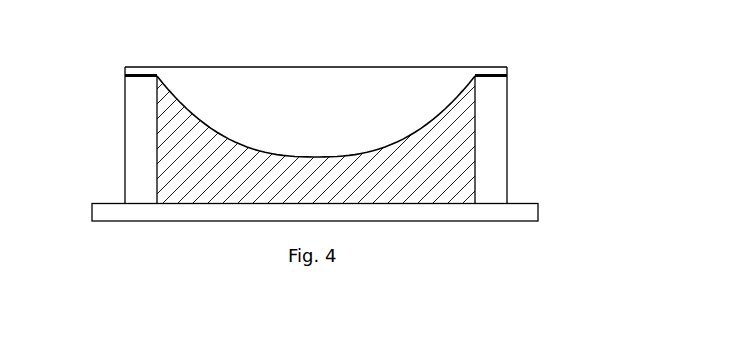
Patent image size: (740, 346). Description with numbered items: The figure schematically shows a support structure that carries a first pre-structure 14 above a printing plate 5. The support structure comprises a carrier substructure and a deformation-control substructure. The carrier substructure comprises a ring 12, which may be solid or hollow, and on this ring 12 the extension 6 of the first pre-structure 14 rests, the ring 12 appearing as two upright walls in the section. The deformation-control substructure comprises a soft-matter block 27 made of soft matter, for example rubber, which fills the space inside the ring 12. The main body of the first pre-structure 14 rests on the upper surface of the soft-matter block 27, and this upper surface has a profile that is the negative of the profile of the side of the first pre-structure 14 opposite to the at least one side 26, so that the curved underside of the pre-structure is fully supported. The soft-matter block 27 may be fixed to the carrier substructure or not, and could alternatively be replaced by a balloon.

The at least one side of the first pre-structure 26 is at (267, 67).
The extension 6 is at (474, 54).
The first pre-structure 14 is at (218, 107).
The ring 12 is at (137, 144).
The soft-matter block 27 is at (428, 162).
The printing plate 5 is at (135, 213).